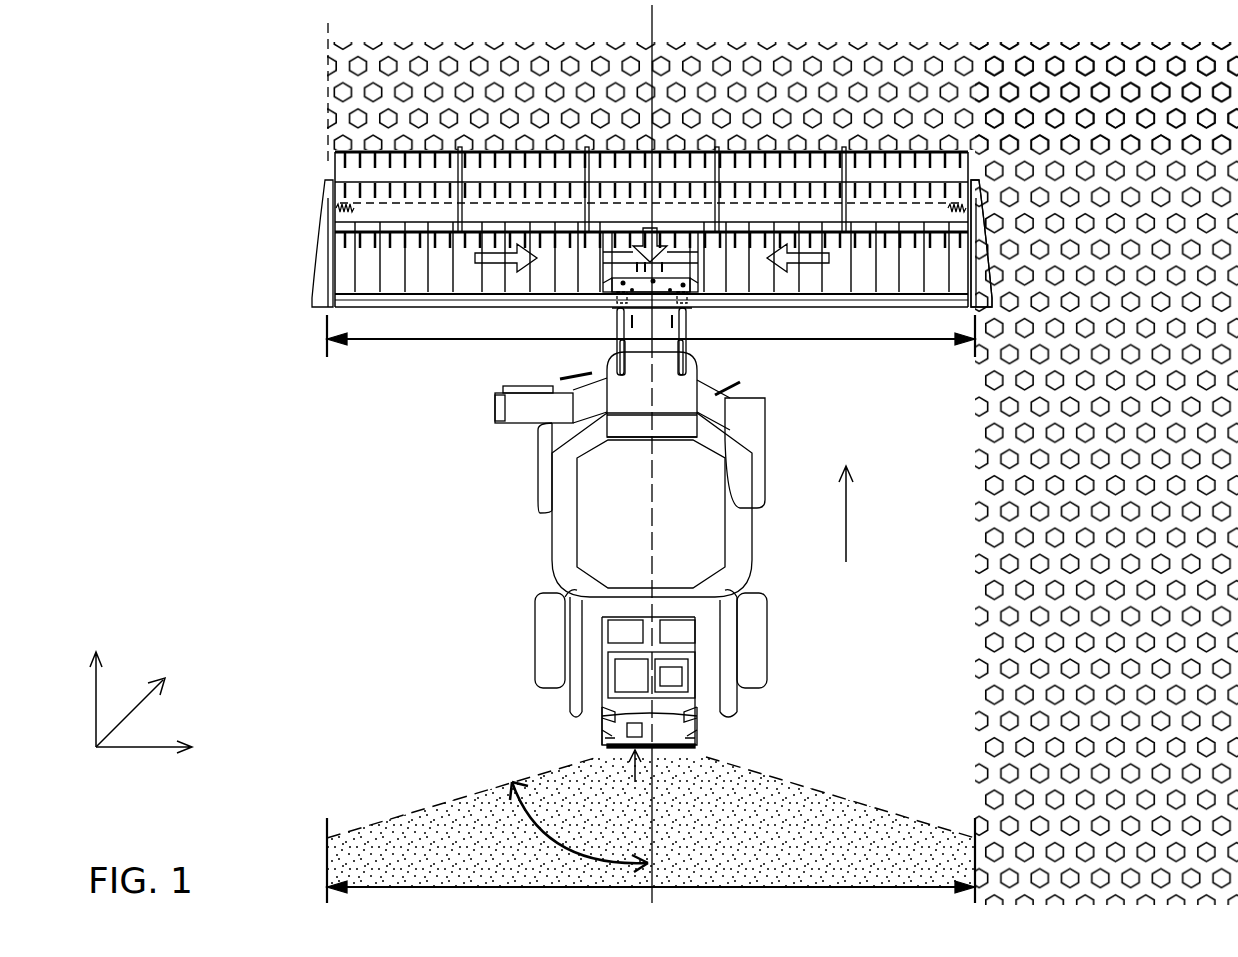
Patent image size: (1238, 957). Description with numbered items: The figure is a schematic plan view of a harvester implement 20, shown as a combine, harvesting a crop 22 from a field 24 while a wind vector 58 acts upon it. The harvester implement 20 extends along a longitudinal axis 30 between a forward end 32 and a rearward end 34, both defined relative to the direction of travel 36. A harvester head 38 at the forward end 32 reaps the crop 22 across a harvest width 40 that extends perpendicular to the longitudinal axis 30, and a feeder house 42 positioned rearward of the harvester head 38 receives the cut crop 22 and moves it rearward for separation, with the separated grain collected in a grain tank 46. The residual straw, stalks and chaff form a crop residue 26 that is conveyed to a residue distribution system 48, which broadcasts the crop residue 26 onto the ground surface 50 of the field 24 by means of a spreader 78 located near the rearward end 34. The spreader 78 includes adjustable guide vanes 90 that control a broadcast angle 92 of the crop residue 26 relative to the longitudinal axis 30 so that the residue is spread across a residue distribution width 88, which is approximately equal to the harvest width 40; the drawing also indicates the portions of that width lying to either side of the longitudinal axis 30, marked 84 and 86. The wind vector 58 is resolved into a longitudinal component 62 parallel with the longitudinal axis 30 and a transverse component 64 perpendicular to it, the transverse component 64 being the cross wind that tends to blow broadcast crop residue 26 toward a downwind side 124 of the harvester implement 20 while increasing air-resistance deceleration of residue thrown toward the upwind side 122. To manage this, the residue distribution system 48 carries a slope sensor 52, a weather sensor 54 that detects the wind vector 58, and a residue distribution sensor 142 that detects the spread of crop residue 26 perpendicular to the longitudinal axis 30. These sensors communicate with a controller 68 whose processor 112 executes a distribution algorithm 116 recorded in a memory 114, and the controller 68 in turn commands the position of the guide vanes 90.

The harvester implement 20 is at (964, 54).
The crop 22 is at (340, 78).
The field 24 is at (365, 550).
The crop residue 26 is at (455, 797).
The longitudinal axis 30 is at (652, 21).
The forward end 32 is at (512, 150).
The rearward end 34 is at (685, 762).
The direction of travel 36 is at (846, 525).
The harvester head 38 is at (978, 164).
The harvest width 40 is at (432, 342).
The feeder house 42 is at (700, 355).
The grain tank 46 is at (752, 495).
The residue distribution system 48 is at (635, 776).
The ground surface 50 is at (845, 842).
The slope sensor 52 is at (610, 631).
The weather sensor 54 is at (690, 631).
The wind vector 58 is at (130, 716).
The longitudinal component 62 is at (97, 693).
The transverse component 64 is at (140, 750).
The controller 68 is at (700, 656).
The spreader 78 is at (695, 726).
The left spread width 84 is at (516, 921).
The right spread width 86 is at (796, 921).
The residue distribution width 88 is at (832, 889).
The adjustable guide vanes 90 is at (700, 739).
The broadcast angle 92 is at (530, 830).
The processor 112 is at (620, 679).
The memory 114 is at (690, 663).
The distribution algorithm 116 is at (676, 681).
The upwind side 122 is at (226, 478).
The downwind side 124 is at (948, 443).
The residue distribution sensor 142 is at (630, 731).